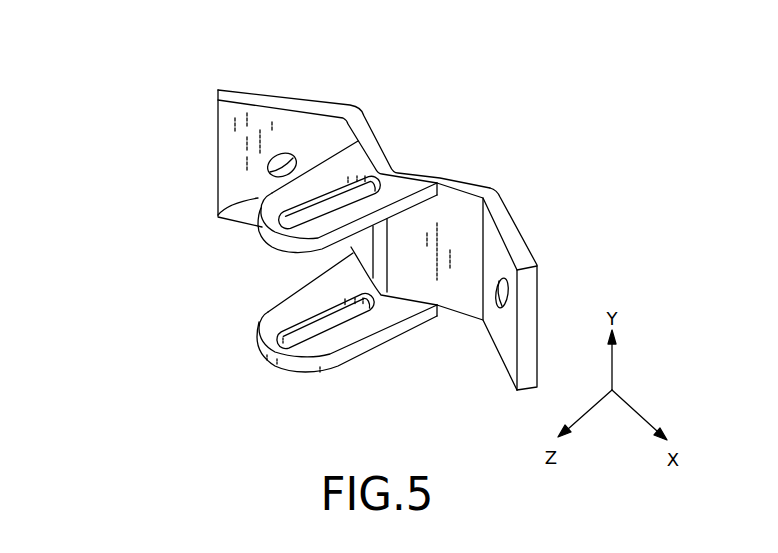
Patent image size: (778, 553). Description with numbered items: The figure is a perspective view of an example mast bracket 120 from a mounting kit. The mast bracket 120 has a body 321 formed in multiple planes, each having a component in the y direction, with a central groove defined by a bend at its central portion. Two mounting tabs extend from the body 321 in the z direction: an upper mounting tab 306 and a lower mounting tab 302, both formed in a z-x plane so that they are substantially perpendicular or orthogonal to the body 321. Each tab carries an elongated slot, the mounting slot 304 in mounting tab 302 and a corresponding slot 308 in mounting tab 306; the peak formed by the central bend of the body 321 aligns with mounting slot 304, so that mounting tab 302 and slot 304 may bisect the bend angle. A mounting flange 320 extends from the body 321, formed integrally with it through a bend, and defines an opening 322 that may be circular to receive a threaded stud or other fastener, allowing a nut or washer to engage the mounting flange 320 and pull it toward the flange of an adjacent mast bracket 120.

The mast bracket 120 is at (152, 98).
The mounting tab 302 is at (352, 342).
The mounting slot 304 is at (268, 310).
The mounting tab 306 is at (218, 215).
The slot in upper tab 308 is at (284, 214).
The mounting flange 320 is at (519, 232).
The body 321 is at (455, 200).
The opening 322 is at (502, 294).